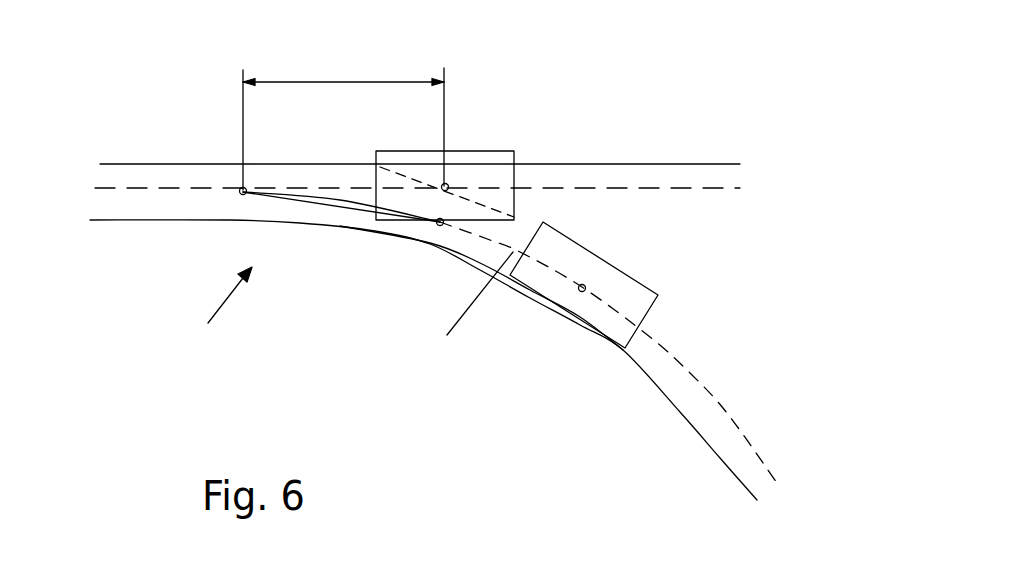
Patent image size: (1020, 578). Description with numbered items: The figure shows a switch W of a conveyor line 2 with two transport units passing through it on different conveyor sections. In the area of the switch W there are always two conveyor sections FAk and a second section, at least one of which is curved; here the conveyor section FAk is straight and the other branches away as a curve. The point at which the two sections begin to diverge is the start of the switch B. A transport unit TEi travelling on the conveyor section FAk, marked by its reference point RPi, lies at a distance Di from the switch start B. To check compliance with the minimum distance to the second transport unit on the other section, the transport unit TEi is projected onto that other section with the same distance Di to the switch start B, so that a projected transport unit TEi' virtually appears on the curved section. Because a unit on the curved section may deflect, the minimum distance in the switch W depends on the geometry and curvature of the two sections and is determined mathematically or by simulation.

The conveyor section FAk is at (127, 163).
The start of the switch B is at (242, 189).
The distance Di is at (312, 255).
The transport unit TEi is at (448, 133).
The reference point i RPi is at (448, 184).
The projected transport unit TEi' is at (481, 288).
The roadway 2 is at (740, 430).
The switch W is at (221, 312).